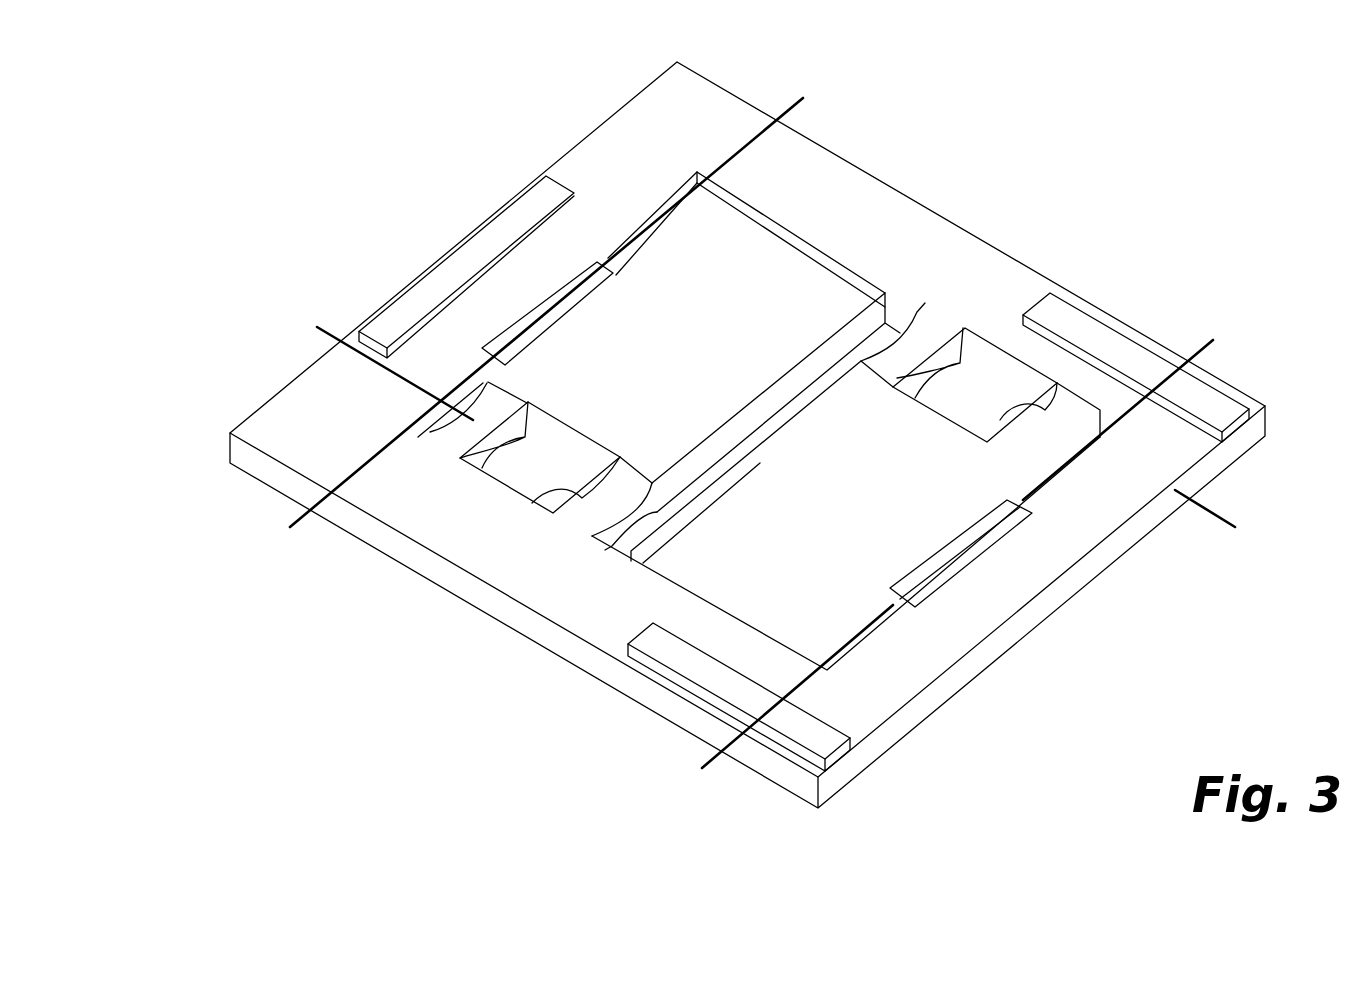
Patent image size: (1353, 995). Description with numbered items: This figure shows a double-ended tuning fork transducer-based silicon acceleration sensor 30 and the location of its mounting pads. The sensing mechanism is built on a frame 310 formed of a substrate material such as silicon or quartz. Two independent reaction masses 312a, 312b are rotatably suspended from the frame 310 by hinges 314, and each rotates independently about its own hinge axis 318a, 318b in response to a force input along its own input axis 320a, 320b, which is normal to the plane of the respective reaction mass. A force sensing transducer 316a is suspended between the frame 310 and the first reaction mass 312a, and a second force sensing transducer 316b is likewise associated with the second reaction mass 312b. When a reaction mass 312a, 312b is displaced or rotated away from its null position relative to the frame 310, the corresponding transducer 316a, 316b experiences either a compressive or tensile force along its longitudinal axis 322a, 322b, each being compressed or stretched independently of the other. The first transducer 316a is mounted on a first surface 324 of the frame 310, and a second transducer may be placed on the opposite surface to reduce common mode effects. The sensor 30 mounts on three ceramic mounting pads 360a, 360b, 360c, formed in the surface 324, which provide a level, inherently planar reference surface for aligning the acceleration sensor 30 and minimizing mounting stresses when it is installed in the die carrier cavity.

The acceleration sensor 30 is at (246, 659).
The frame 310 is at (1018, 262).
The reaction mass 312a is at (808, 225).
The reaction mass 312b is at (852, 670).
The hinge 314 is at (510, 488).
The force sensing transducer 316a is at (587, 261).
The force sensing transducer 316b is at (966, 567).
The hinge axis 318a is at (325, 328).
The hinge axis 318b is at (1217, 525).
The input axis 320a is at (683, 337).
The input axis 320b is at (844, 522).
The longitudinal axis 322a is at (293, 527).
The longitudinal axis 322b is at (1213, 348).
The first surface 324 is at (688, 112).
The ceramic mounting pad 360a is at (442, 258).
The ceramic mounting pad 360b is at (690, 697).
The ceramic mounting pad 360c is at (1190, 418).